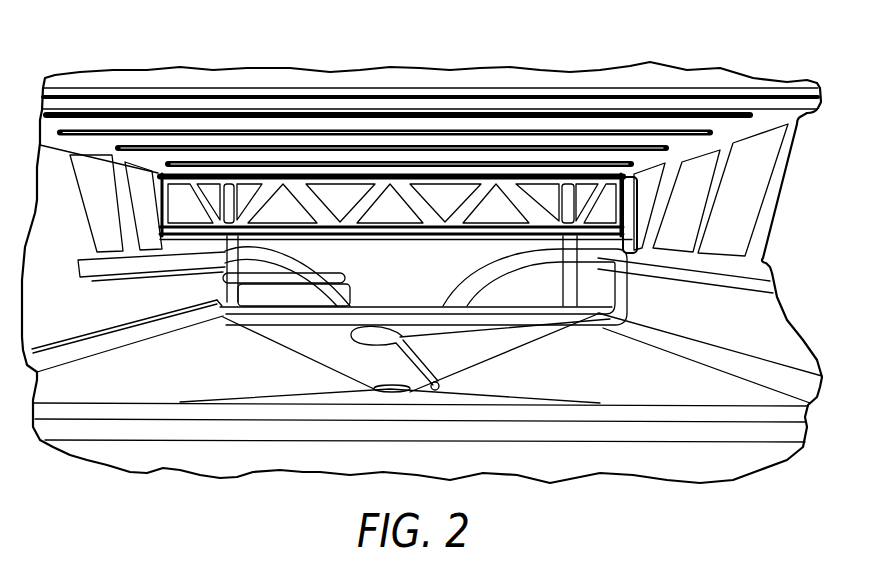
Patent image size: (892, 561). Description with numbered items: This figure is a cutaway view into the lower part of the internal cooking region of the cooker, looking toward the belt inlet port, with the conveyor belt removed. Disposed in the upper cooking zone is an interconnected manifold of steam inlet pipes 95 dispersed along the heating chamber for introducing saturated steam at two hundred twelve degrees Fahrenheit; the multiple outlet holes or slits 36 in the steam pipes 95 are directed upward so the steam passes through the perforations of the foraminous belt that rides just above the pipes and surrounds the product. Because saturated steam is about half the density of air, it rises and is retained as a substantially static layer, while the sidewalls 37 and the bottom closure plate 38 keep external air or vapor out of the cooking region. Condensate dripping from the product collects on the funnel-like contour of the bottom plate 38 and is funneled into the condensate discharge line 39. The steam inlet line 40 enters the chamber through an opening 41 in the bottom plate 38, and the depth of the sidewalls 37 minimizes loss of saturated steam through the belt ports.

The outlet holes or slits 36 is at (377, 88).
The steam inlet pipes 95 is at (215, 112).
The sidewalls 37 is at (778, 330).
The bottom closure plate 38 is at (137, 360).
The condensate discharge line 39 is at (290, 379).
The steam inlet line 40 is at (512, 340).
The opening 41 is at (448, 384).